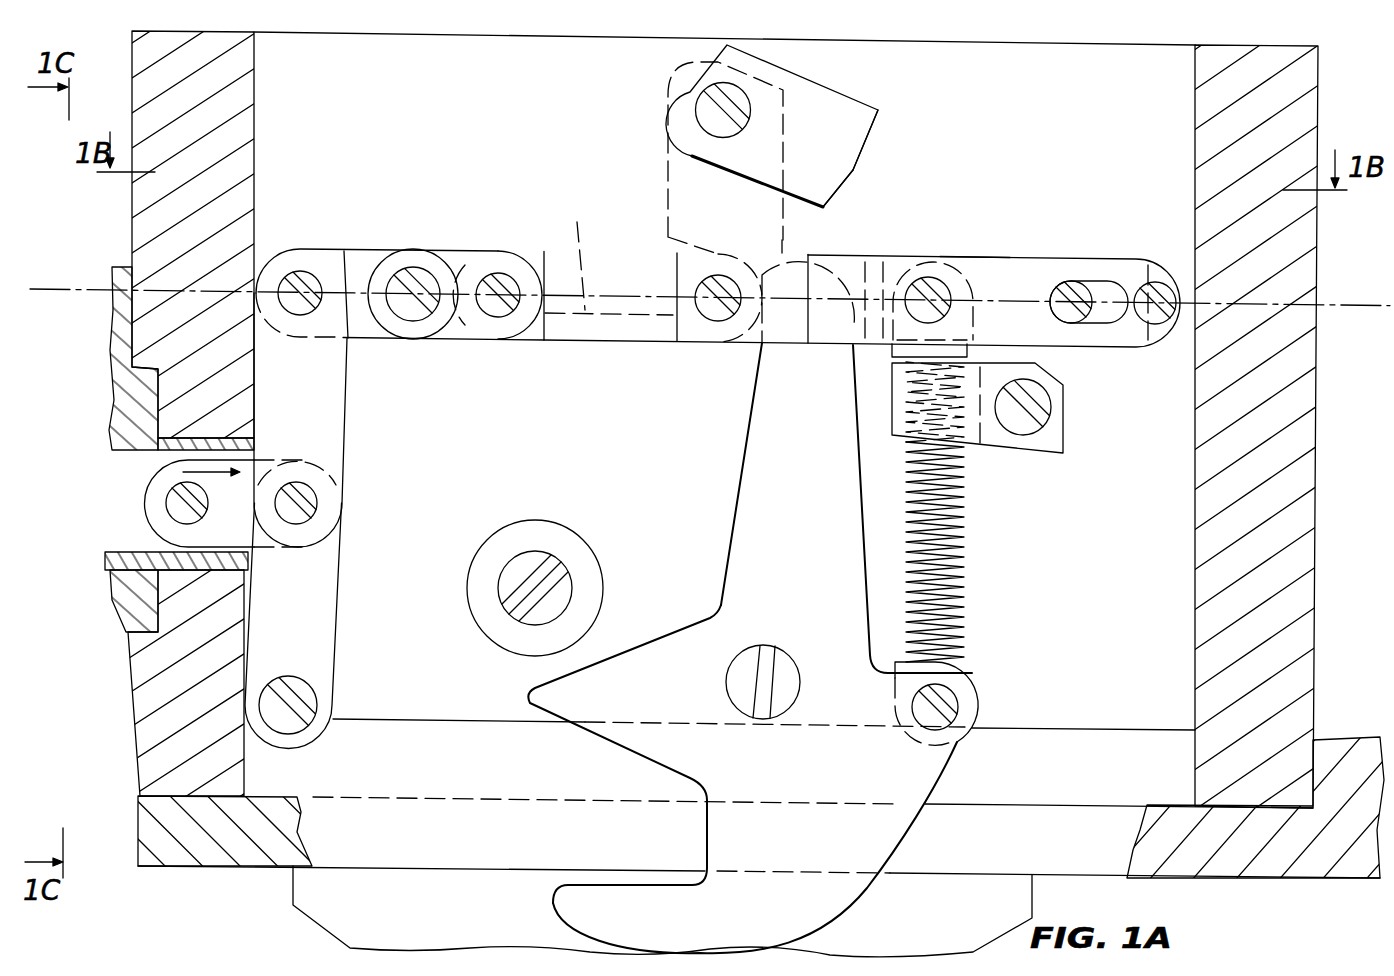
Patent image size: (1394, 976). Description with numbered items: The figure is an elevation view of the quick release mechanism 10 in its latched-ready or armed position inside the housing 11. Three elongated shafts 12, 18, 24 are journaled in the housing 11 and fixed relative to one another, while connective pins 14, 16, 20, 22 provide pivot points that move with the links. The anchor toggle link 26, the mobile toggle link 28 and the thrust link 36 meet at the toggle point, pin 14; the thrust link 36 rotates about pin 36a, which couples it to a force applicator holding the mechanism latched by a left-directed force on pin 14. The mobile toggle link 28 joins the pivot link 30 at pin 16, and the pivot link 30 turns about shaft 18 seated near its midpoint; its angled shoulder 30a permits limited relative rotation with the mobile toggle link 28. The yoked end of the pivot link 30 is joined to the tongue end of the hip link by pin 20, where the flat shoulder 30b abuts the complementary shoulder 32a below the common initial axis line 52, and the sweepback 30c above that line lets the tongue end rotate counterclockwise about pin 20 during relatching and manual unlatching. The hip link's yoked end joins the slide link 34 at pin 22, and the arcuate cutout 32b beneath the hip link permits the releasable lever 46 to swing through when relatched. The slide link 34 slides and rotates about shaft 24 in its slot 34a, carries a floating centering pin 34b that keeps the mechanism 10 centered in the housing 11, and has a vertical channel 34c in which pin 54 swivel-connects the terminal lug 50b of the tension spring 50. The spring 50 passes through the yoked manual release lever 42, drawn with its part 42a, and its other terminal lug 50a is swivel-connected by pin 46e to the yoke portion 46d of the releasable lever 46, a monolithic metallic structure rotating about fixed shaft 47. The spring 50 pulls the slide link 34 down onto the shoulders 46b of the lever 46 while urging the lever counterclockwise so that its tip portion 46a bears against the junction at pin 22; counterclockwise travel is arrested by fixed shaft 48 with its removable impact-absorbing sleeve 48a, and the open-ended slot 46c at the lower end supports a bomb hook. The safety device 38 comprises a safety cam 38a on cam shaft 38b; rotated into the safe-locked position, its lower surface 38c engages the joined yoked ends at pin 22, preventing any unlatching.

The quick release mechanism 10 is at (1162, 542).
The housing 11 is at (1253, 372).
The elongated shaft 12 is at (277, 683).
The connective pin 14 is at (318, 503).
The connective pin 16 is at (302, 277).
The elongated shaft 18 is at (413, 277).
The connective pin 20 is at (500, 277).
The connective pin 22 is at (712, 312).
The elongated shaft 24 is at (1078, 287).
The anchor toggle link 26 is at (333, 597).
The mobile toggle link 28 is at (342, 397).
The pivot link 30 is at (357, 252).
The angled shoulder 30a is at (357, 320).
The flat shoulder 30b is at (532, 333).
The sweepback 30c is at (533, 256).
The shoulder 32a is at (553, 337).
The arcuately shaped cutout 32b is at (569, 253).
The slide link 34 is at (1053, 253).
The slot 34a is at (1113, 322).
The floating centering pin 34b is at (1162, 287).
The transverse slot or channel 34c is at (977, 267).
The thrust link 36 is at (243, 530).
The pin 36a is at (173, 513).
The safety device 38 is at (866, 83).
The safety cam 38a is at (842, 164).
The safety cam shaft 38b is at (752, 105).
The lower surface 38c is at (868, 140).
The yoked manual release lever 42 is at (1012, 455).
The guide block pin 42a is at (1040, 412).
The releasable lever 46 is at (817, 597).
The tip portion 46a is at (760, 287).
The shoulders 46b is at (790, 345).
The open ended slot 46c is at (650, 885).
The yoke portion 46d is at (955, 753).
The pin 46e is at (947, 703).
The fixed shaft 47 is at (733, 663).
The fixed shaft 48 is at (553, 575).
The removable impact absorbing sleeve 48a is at (522, 522).
The tension spring 50 is at (964, 540).
The terminal lug 50a is at (972, 662).
The terminal lug 50b is at (957, 267).
The initial axis line 52 is at (97, 290).
The pin 54 is at (927, 283).